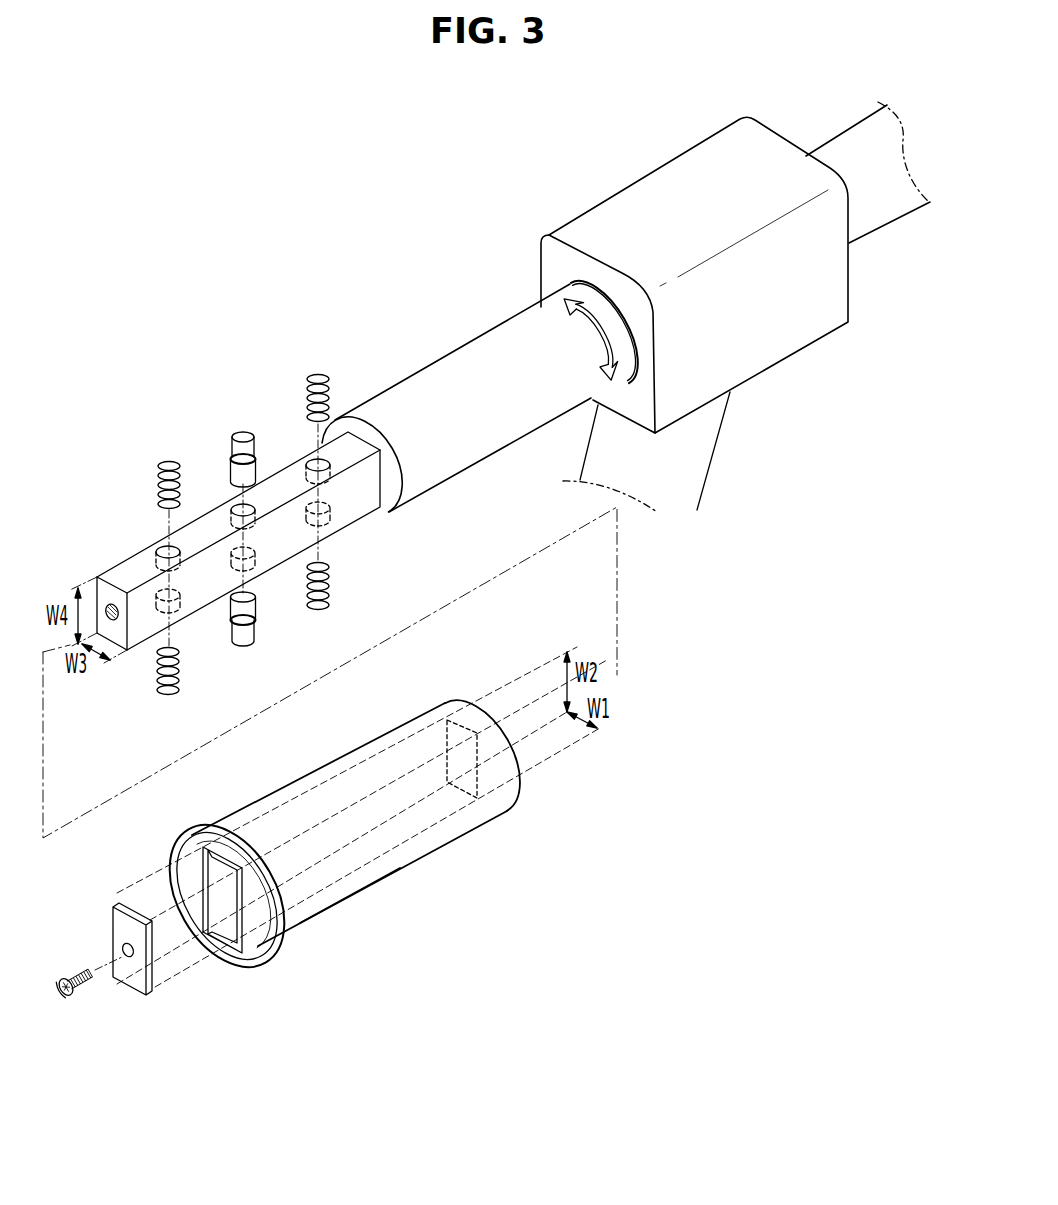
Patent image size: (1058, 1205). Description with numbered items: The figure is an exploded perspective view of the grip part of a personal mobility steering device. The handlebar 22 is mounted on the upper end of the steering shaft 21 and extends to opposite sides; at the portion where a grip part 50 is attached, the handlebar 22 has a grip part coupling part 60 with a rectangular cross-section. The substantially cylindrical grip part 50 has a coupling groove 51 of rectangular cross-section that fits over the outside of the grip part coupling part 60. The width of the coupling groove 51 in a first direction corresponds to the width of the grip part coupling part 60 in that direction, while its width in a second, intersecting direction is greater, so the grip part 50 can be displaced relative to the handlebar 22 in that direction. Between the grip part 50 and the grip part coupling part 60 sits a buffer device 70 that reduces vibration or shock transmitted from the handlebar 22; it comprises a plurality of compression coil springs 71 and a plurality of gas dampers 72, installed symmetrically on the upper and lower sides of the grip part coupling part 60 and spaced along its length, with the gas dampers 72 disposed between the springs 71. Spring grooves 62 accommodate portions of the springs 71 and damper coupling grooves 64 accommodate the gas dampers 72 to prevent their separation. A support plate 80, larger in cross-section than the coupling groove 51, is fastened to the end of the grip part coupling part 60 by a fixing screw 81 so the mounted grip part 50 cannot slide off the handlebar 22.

The steering shaft 21 is at (697, 463).
The handlebar 22 is at (497, 340).
The grip part 50 is at (342, 836).
The coupling groove 51 is at (345, 880).
The grip part coupling part 60 is at (120, 568).
The spring groove 62 is at (331, 517).
The damper coupling groove 64 is at (262, 558).
The buffer device 70 is at (327, 371).
The spring 71 is at (169, 460).
The gas damper 72 is at (238, 430).
The support plate 80 is at (135, 978).
The fixing screw 81 is at (66, 997).